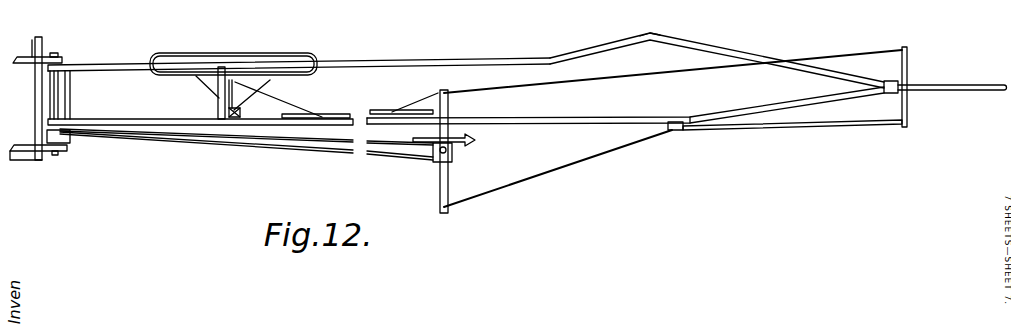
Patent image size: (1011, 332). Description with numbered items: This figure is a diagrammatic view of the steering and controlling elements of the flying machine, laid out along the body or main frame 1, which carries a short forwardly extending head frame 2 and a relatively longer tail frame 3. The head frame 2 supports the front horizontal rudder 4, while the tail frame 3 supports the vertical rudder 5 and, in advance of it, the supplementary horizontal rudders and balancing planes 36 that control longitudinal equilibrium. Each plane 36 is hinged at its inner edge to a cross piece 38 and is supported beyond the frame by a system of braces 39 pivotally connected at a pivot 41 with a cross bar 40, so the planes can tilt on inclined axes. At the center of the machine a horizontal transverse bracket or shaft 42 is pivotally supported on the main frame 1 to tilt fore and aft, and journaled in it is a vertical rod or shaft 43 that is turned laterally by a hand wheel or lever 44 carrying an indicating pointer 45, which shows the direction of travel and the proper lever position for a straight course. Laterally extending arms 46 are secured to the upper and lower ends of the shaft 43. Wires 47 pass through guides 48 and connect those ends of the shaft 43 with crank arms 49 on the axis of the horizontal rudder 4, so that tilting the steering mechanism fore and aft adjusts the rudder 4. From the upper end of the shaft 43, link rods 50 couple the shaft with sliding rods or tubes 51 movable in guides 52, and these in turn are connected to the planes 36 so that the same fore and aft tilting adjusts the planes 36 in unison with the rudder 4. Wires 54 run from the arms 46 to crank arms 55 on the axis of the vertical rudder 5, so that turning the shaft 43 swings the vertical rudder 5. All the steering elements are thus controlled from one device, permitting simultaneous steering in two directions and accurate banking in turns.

The body or main frame 1 is at (494, 53).
The head frame 2 is at (691, 37).
The tail frame 3 is at (299, 54).
The horizontal rudder 4 is at (950, 85).
The vertical rudder 5 is at (38, 37).
The supplementary horizontal rudders and balancing planes 36 is at (194, 57).
The cross piece 38 is at (217, 94).
The braces 39 is at (272, 82).
The cross bar 40 is at (236, 118).
The pivot 41 is at (246, 106).
The horizontal transverse bracket or shaft 42 is at (434, 158).
The vertical rod or shaft 43 is at (450, 174).
The hand wheel or lever 44 is at (413, 139).
The indicating pointer 45 is at (476, 140).
The laterally extending arms 46 is at (440, 164).
The wires 47 is at (632, 77).
The guides 48 is at (677, 132).
The crank arms 49 is at (910, 57).
The link rods 50 is at (408, 110).
The sliding rods or tubes 51 is at (345, 113).
The guides 52 is at (299, 113).
The wires 54 is at (338, 149).
The crank arms 55 is at (72, 141).